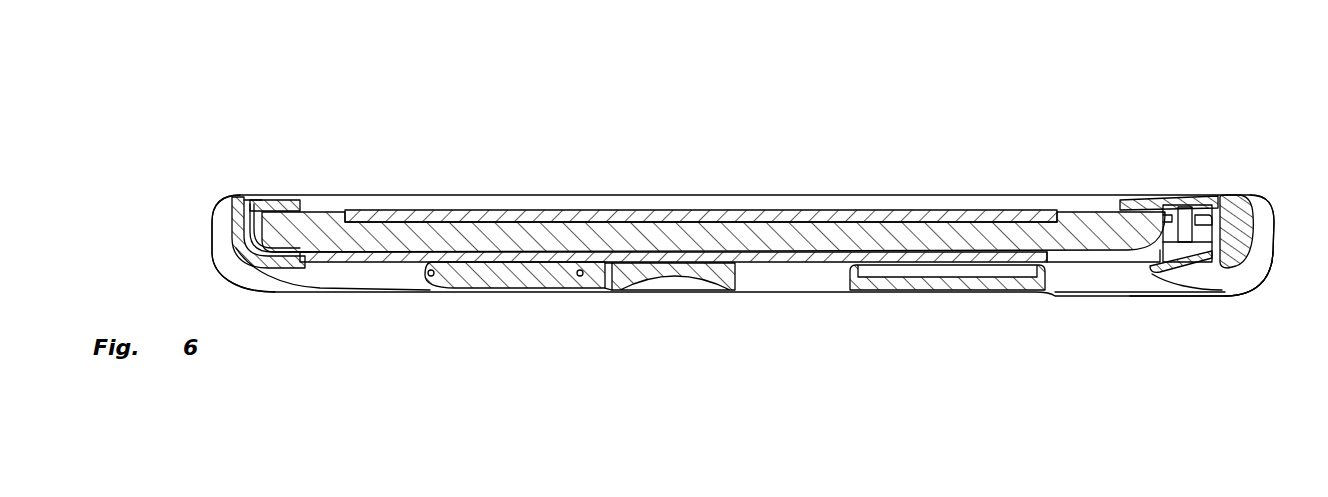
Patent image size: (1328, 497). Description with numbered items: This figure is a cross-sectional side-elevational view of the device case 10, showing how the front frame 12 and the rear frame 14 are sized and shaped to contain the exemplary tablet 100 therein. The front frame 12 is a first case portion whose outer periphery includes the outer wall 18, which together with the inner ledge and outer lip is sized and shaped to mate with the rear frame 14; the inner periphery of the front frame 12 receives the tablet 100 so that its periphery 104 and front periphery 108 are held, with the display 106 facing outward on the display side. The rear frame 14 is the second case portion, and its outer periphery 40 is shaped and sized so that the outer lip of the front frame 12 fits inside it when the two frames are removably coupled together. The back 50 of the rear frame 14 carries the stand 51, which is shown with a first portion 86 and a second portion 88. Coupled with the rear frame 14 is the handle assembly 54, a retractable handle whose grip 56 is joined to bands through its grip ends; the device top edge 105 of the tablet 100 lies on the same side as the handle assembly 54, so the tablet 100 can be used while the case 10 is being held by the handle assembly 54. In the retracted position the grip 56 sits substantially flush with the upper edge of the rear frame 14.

The device case 10 is at (212, 86).
The front frame 12 is at (1188, 172).
The rear frame 14 is at (1040, 375).
The outer wall 18 is at (292, 195).
The outer periphery 40 is at (213, 213).
The back 50 is at (852, 330).
The stand 51 is at (678, 342).
The handle assembly 54 is at (1290, 252).
The grip 56 is at (1237, 193).
The first portion 86 is at (935, 290).
The second portion 88 is at (528, 290).
The tablet 100 is at (458, 230).
The periphery 104 is at (252, 248).
The device top edge 105 is at (1192, 280).
The display 106 is at (535, 212).
The front periphery 108 is at (335, 200).